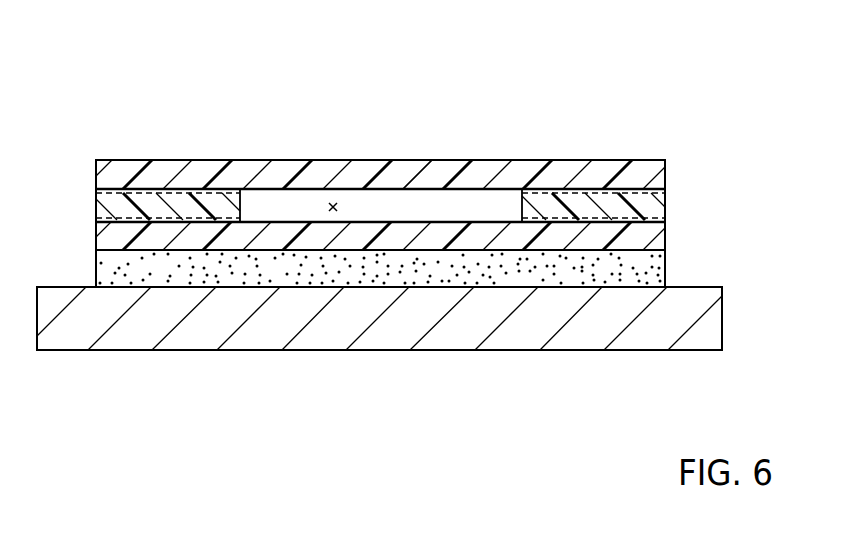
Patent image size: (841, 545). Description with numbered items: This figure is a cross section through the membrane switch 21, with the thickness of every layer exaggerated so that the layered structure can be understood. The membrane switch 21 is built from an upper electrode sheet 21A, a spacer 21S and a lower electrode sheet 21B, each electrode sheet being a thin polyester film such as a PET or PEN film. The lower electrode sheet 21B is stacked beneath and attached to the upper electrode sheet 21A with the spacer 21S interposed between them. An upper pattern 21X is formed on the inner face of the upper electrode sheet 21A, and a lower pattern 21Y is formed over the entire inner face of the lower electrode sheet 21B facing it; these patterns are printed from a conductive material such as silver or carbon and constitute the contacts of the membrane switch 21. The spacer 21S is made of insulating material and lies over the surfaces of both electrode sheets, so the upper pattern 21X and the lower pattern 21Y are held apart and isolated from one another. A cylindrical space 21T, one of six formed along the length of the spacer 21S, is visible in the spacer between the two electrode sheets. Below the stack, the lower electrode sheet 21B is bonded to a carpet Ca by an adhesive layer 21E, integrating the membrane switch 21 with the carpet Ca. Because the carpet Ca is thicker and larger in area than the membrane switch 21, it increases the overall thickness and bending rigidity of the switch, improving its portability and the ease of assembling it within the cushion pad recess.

The membrane switch 21 is at (593, 107).
The upper electrode sheet 21A is at (643, 177).
The lower electrode sheet 21B is at (643, 240).
The adhesive layer 21E is at (643, 267).
The spacer 21S is at (177, 202).
The cylindrical space 21T is at (333, 205).
The upper pattern 21X is at (418, 173).
The lower pattern 21Y is at (493, 220).
The carpet Ca is at (392, 330).